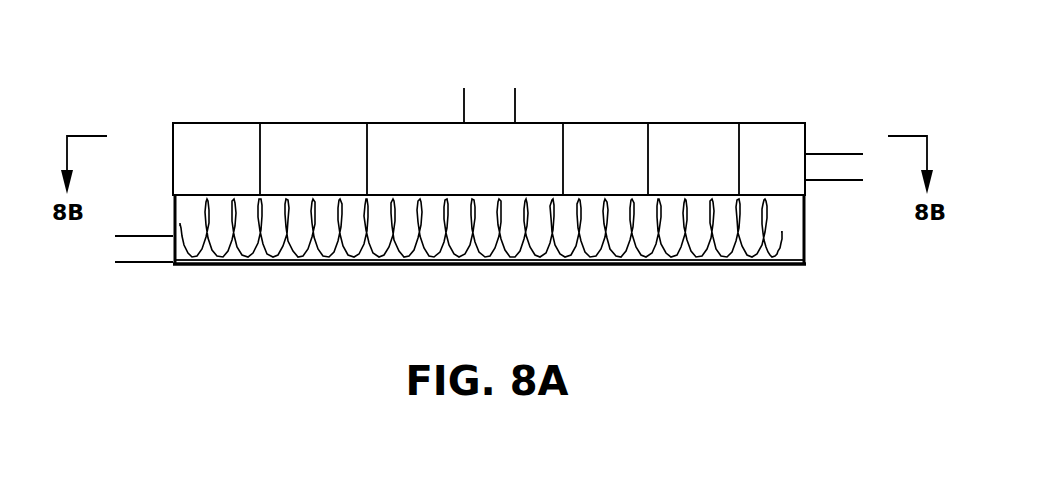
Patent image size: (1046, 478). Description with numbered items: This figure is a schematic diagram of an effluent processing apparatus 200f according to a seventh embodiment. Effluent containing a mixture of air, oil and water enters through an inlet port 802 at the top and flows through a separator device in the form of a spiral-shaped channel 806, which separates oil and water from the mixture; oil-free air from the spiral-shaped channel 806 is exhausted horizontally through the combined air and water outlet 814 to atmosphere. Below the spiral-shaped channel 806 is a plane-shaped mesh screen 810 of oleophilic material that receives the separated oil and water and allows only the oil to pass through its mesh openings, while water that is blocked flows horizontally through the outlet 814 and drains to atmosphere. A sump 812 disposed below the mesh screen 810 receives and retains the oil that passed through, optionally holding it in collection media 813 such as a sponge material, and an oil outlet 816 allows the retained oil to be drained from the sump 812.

The effluent processing apparatus 200f is at (706, 90).
The inlet port 802 is at (488, 90).
The spiral-shaped channel 806 is at (466, 173).
The mesh screen 810 is at (323, 193).
The sump 812 is at (400, 268).
The collection media 813 is at (594, 249).
The combined air and water outlet 814 is at (835, 165).
The oil outlet 816 is at (145, 250).